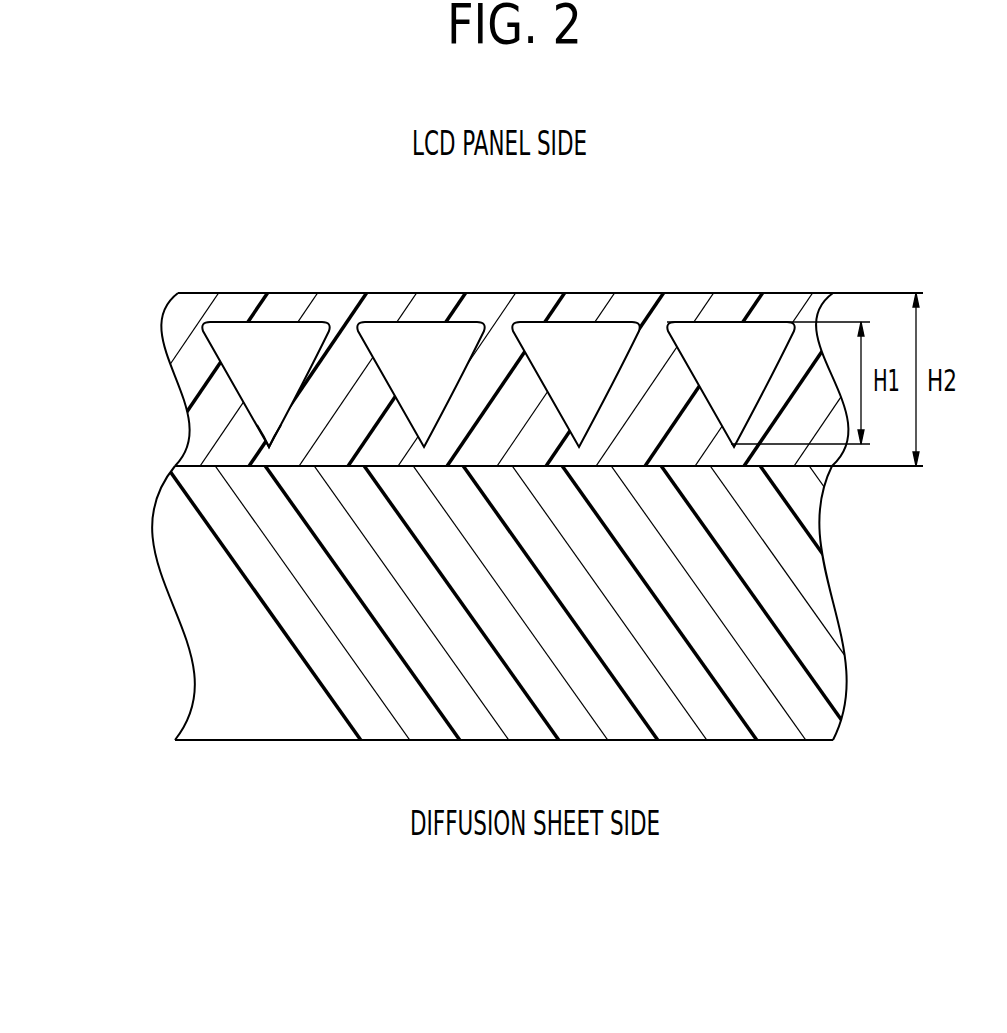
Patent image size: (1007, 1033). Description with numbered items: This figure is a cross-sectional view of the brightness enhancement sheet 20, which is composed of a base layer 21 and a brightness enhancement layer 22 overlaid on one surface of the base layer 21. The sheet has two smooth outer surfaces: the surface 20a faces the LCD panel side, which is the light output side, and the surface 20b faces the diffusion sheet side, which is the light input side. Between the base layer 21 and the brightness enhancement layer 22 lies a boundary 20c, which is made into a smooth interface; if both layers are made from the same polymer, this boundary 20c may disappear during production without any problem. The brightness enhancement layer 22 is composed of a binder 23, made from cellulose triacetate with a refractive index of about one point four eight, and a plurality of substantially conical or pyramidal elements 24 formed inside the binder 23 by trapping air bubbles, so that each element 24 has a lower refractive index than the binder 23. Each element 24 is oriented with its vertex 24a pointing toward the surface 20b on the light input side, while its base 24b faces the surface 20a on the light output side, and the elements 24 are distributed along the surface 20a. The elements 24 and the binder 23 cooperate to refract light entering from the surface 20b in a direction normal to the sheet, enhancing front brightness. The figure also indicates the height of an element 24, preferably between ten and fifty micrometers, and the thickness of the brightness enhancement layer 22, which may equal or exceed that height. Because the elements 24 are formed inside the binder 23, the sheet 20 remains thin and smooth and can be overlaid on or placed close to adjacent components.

The brightness enhancement sheet 20 is at (333, 253).
The surface 20a is at (238, 292).
The surface 20b is at (282, 743).
The boundary 20c is at (220, 467).
The base layer 21 is at (132, 586).
The brightness enhancement layer 22 is at (146, 388).
The binder 23 is at (663, 300).
The substantially conical or pyramidal element 24 is at (600, 320).
The vertex 24a is at (262, 450).
The base 24b is at (238, 318).